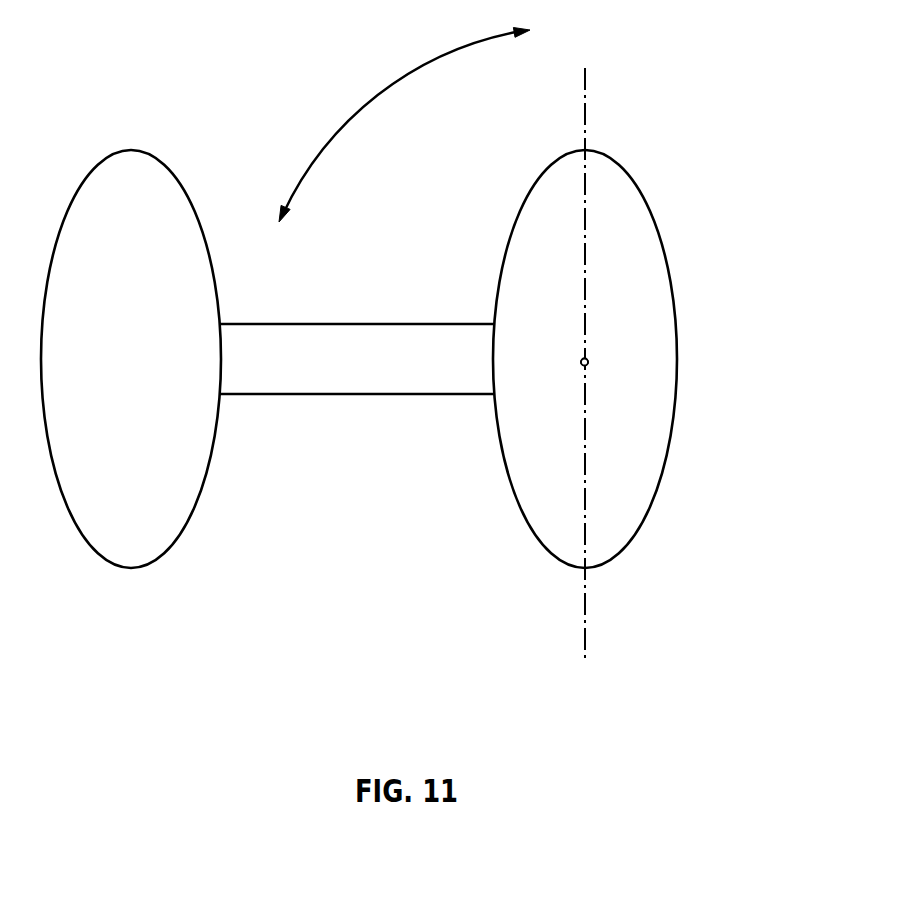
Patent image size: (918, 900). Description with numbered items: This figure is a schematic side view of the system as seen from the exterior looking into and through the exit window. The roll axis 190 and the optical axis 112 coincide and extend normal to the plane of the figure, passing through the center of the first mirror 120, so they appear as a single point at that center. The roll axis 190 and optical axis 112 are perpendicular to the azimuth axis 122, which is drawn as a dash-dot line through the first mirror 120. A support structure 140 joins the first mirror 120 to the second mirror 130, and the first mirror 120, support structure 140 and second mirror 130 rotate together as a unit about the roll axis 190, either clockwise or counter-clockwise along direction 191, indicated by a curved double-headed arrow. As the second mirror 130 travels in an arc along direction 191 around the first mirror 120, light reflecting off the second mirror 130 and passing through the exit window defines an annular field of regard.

The optical axis 112 is at (588, 362).
The first mirror 120 is at (663, 474).
The azimuth axis 122 is at (585, 98).
The second mirror 130 is at (135, 569).
The support structure 140 is at (352, 396).
The roll axis 190 is at (584, 362).
The direction 191 is at (373, 98).